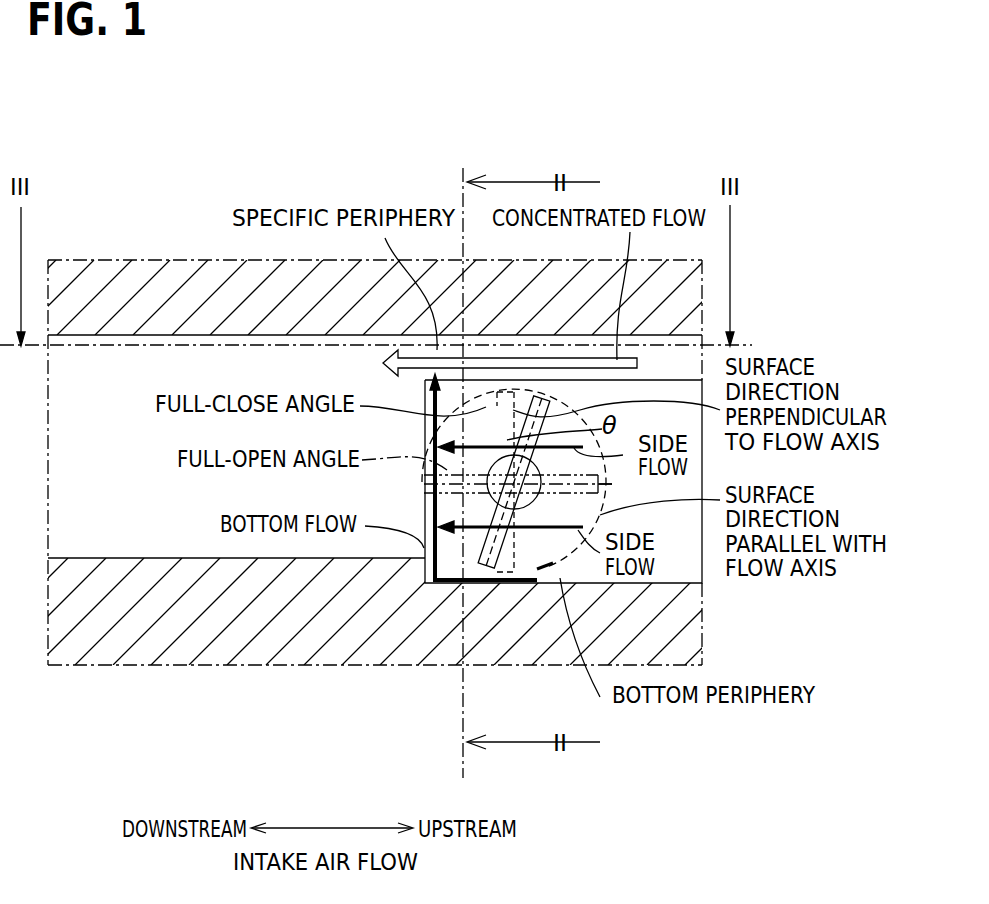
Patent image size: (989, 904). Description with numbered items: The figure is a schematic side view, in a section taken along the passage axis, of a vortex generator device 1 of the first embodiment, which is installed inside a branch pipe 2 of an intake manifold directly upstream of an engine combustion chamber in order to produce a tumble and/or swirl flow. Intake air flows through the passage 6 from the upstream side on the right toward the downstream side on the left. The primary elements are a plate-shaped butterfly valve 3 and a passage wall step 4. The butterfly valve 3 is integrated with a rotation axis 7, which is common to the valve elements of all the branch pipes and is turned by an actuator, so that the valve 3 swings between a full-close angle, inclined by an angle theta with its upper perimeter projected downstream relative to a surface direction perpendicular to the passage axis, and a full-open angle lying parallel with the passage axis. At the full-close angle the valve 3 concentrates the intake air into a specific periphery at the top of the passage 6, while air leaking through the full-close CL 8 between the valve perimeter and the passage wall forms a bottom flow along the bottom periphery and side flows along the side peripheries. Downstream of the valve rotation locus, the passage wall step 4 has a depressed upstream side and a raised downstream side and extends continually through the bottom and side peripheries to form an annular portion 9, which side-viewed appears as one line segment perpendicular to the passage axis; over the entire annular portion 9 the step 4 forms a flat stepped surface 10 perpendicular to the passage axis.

The vortex generator device 1 is at (228, 192).
The branch pipe 2 is at (112, 638).
The butterfly valve 3 is at (528, 540).
The passage wall step 4 is at (396, 645).
The passage 6 is at (75, 439).
The rotation axis 7 is at (497, 503).
The full-close CL 8 is at (540, 570).
The annular portion 9 is at (415, 514).
The stepped surface 10 is at (427, 563).